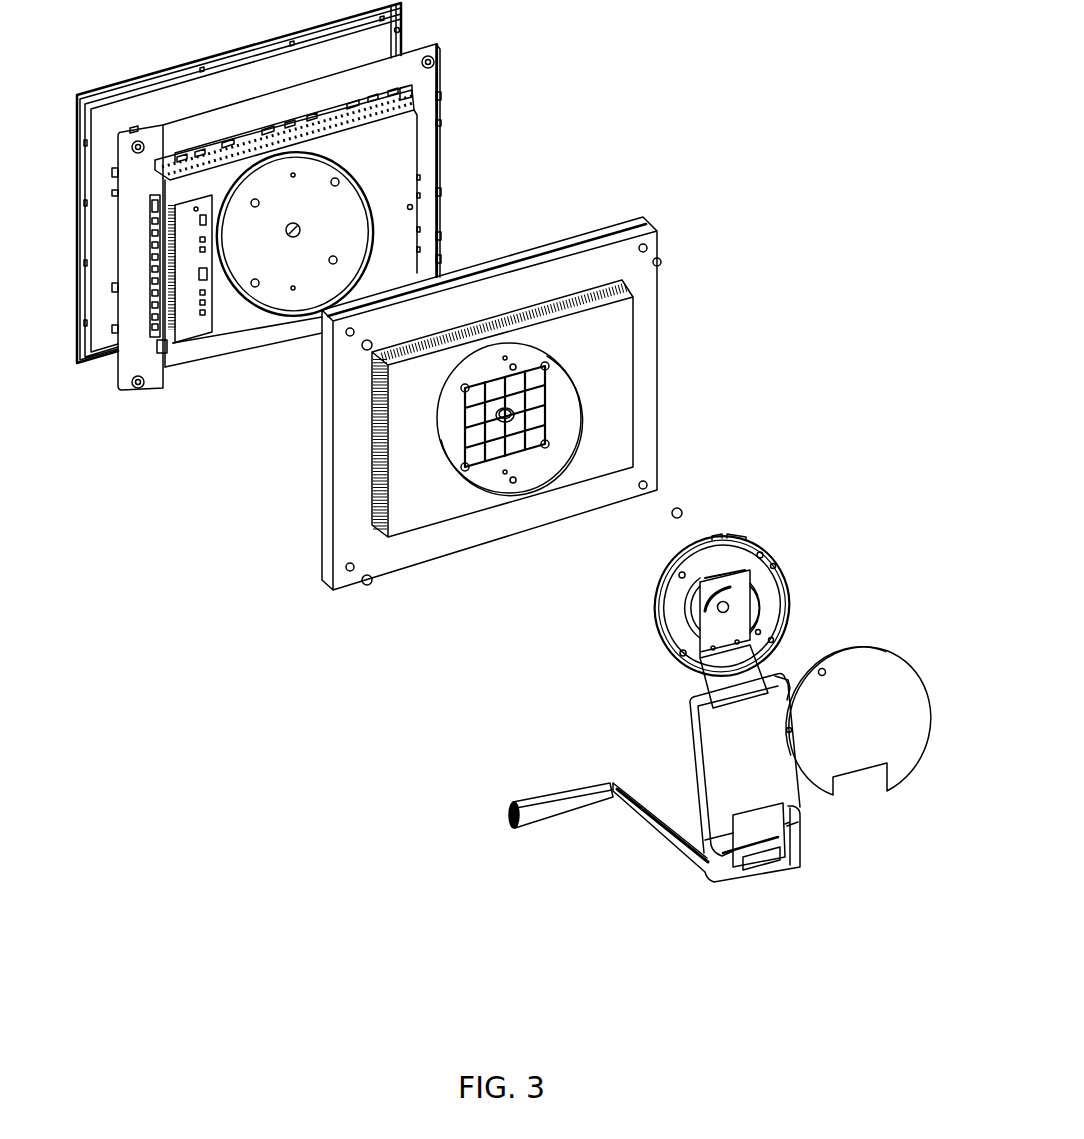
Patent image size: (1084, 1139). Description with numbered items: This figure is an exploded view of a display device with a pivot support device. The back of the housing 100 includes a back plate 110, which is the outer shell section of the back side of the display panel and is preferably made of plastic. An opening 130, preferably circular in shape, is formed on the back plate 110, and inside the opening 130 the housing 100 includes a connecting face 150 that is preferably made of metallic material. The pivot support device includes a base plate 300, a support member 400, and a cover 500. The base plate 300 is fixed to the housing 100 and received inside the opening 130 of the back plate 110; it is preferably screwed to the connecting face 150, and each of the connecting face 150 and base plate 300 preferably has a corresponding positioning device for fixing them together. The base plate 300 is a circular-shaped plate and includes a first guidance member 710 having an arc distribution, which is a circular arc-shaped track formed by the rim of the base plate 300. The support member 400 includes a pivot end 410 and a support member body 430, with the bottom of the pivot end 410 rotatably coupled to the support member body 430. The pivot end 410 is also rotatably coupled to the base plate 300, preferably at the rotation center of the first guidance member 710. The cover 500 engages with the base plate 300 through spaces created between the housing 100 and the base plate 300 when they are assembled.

The housing 100 is at (647, 322).
The back plate 110 is at (613, 450).
The opening 130 is at (560, 403).
The connecting face 150 is at (473, 437).
The base plate 300 is at (747, 553).
The first guidance member 710 is at (722, 537).
The pivot end 410 is at (707, 620).
The support member 400 is at (717, 730).
The support member body 430 is at (730, 773).
The cover 500 is at (903, 682).